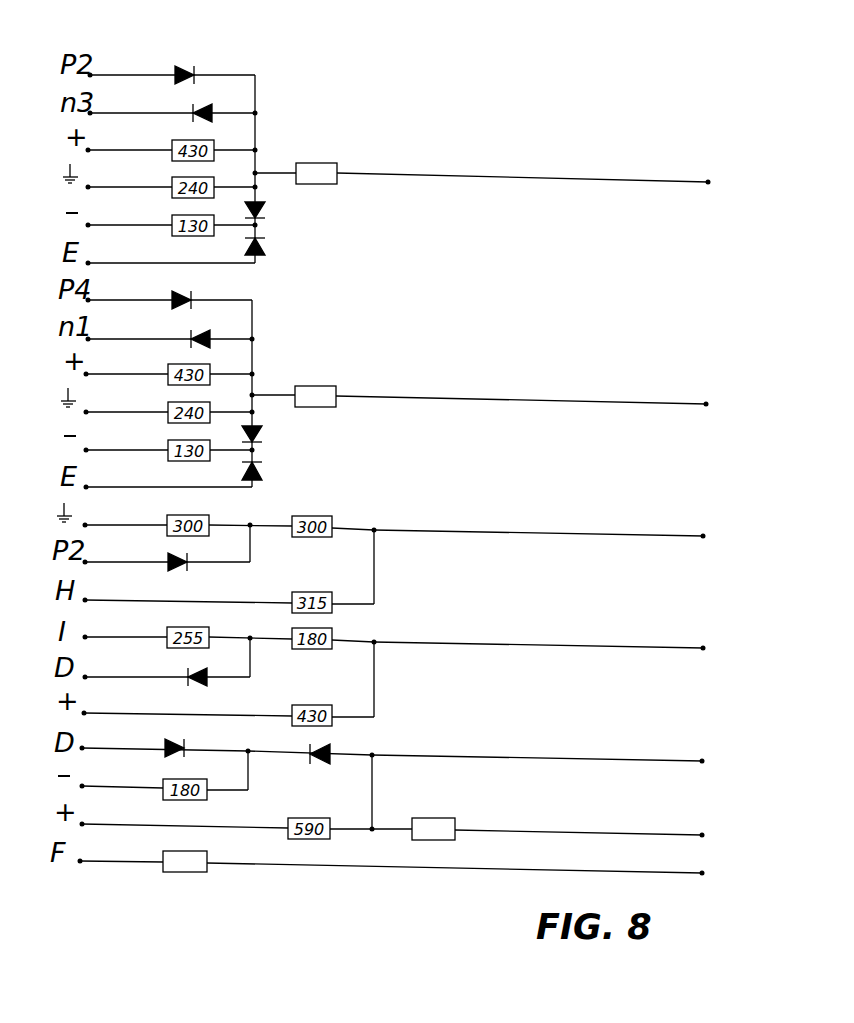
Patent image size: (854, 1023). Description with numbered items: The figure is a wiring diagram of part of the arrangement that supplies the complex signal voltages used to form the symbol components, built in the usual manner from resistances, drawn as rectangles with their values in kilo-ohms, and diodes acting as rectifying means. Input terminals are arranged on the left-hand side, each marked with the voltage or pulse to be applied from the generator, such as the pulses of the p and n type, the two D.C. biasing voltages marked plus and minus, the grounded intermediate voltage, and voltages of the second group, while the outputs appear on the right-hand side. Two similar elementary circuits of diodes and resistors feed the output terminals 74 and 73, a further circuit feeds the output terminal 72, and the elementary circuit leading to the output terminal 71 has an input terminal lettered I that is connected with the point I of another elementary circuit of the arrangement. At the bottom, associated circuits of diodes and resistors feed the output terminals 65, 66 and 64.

The output terminal 74 is at (504, 172).
The output terminal 73 is at (502, 394).
The output terminal 72 is at (541, 526).
The output terminal 71 is at (541, 639).
The output terminal 65 is at (558, 752).
The output terminal 66 is at (558, 827).
The output terminal 64 is at (412, 865).